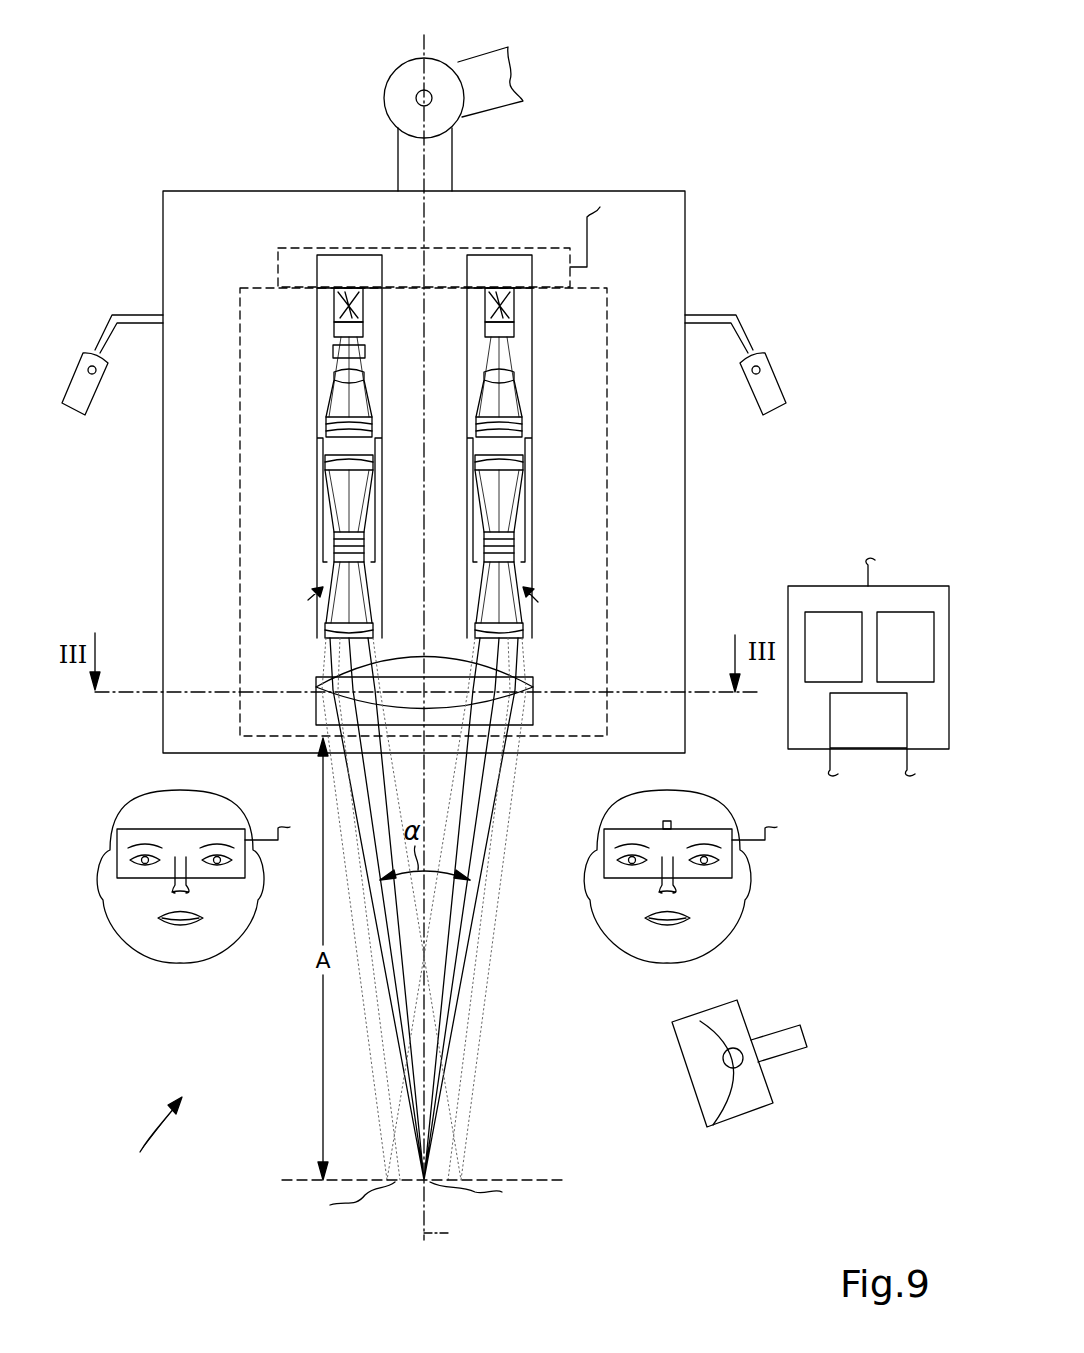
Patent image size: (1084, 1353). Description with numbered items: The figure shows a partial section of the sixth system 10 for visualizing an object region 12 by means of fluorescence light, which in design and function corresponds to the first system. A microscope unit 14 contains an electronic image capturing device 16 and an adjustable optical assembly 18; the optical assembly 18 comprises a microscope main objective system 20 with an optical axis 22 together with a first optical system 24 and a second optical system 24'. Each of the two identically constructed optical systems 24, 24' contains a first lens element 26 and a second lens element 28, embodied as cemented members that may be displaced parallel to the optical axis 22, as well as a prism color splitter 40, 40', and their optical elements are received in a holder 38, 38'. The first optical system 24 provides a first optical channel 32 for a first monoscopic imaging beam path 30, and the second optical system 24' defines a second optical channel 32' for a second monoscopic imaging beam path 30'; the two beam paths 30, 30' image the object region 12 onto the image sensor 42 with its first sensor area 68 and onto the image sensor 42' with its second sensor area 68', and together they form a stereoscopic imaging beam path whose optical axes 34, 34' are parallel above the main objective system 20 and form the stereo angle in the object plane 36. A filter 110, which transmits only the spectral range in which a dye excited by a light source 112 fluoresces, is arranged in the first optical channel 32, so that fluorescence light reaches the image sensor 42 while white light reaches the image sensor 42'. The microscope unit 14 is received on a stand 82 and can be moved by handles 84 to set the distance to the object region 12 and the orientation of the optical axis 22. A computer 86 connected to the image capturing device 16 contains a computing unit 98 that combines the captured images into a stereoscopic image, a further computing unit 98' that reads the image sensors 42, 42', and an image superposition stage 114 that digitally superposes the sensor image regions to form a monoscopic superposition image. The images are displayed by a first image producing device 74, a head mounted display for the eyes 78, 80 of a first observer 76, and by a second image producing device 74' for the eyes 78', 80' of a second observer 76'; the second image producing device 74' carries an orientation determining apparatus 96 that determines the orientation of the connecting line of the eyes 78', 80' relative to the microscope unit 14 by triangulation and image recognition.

The system for visualizing an object region 10 is at (150, 1140).
The object region 12 is at (401, 1200).
The microscope unit 14 is at (192, 232).
The electronic image capturing device 16 is at (415, 279).
The adjustable optical assembly 18 is at (414, 379).
The microscope main objective system 20 is at (316, 710).
The optical axis 22 is at (459, 1232).
The first optical system 24 is at (273, 546).
The second optical system 24' is at (579, 546).
The first lens element 26 is at (278, 494).
The second lens element 28 is at (277, 592).
The first monoscopic imaging beam path 30 is at (277, 377).
The second monoscopic imaging beam path 30' is at (575, 377).
The first optical channel 32 is at (253, 615).
The second optical channel 32' is at (598, 615).
The optical axis of first imaging beam path 34 is at (277, 436).
The optical axis of second imaging beam path 34' is at (575, 430).
The object plane 36 is at (540, 1178).
The holder 38 is at (278, 652).
The holder 38' is at (574, 652).
The prism color splitter 40 is at (273, 327).
The prism color splitter 40' is at (579, 327).
The image sensor 42 is at (349, 418).
The image sensor 42' is at (499, 418).
The first sensor area 68 is at (273, 297).
The second sensor area 68' is at (579, 297).
The first image producing device 74 is at (102, 782).
The second image producing device 74' is at (746, 778).
The first observer 76 is at (185, 870).
The second observer 76' is at (686, 869).
The eye 78 is at (152, 840).
The eye 78' is at (638, 879).
The eye 80 is at (266, 878).
The eye 80' is at (780, 857).
The stand 82 is at (476, 52).
The handles 84 is at (85, 352).
The computer 86 is at (868, 652).
The orientation determining apparatus 96 is at (664, 821).
The computing unit 98 is at (833, 647).
The further computing unit 98' is at (905, 647).
The filter 110 is at (333, 351).
The light source 112 is at (753, 1108).
The image superposition stage 114 is at (848, 733).